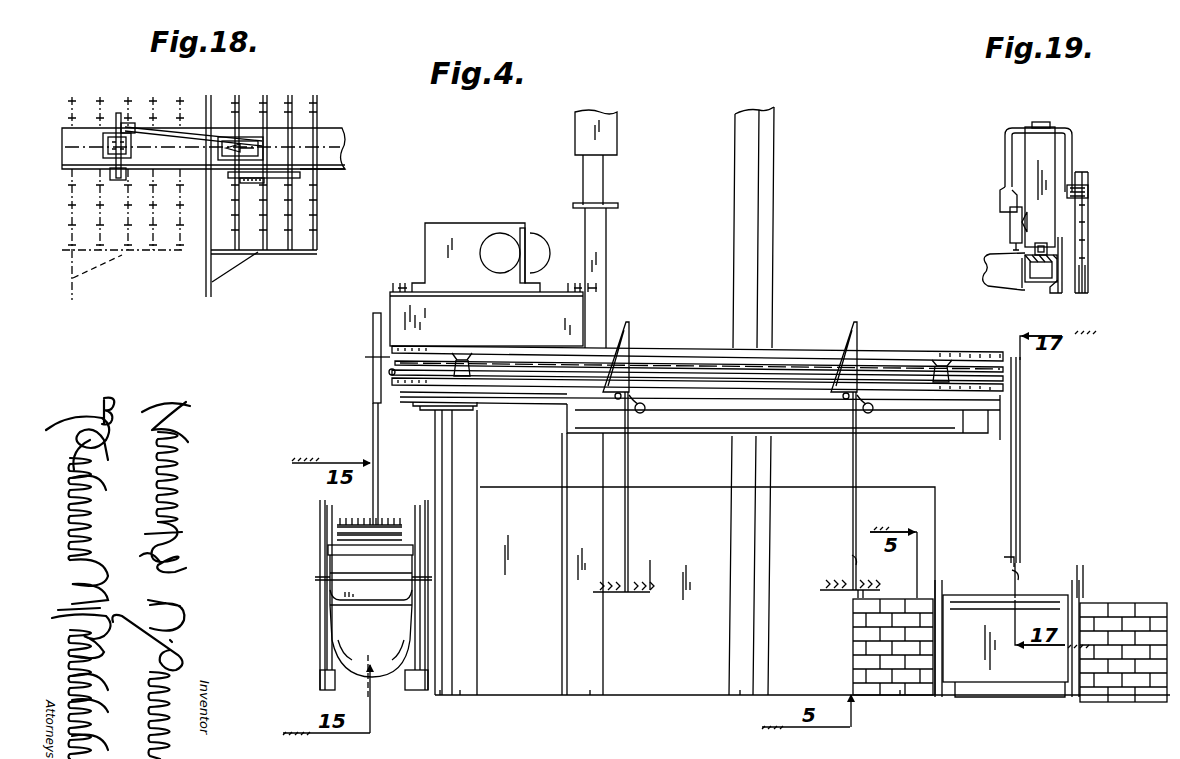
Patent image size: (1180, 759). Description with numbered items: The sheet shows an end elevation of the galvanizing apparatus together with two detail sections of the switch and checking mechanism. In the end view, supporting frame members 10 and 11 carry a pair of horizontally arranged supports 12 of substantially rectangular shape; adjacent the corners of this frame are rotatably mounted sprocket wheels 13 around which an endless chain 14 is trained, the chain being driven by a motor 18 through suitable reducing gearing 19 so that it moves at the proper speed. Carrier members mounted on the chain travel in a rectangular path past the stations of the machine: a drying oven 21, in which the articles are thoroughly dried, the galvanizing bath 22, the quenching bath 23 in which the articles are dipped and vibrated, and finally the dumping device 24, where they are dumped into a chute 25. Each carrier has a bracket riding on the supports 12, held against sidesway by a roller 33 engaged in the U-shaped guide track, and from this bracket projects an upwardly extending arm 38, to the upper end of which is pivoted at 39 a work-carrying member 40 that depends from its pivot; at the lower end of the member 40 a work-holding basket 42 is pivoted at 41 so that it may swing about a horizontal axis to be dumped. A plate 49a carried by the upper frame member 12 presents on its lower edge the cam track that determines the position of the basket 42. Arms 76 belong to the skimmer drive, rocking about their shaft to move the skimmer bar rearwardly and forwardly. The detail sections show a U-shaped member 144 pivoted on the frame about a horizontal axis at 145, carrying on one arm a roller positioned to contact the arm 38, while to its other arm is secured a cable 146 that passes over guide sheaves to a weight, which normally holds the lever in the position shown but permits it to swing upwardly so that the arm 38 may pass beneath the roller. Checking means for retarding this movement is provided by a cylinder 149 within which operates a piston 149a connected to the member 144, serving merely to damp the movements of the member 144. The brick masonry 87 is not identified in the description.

In FIG. 4, the supporting frame member 10 is at (770, 272).
In FIG. 4, the supporting frame member 11 is at (470, 426).
In FIG. 18, the horizontally arranged support 12 is at (334, 150).
In FIG. 19, the horizontally arranged support 12 is at (1000, 274).
In FIG. 4, the horizontally arranged support 12 is at (726, 350).
In FIG. 4, the sprocket wheel 13 is at (464, 358).
In FIG. 4, the endless chain 14 is at (660, 356).
In FIG. 4, the motor 18 is at (537, 244).
In FIG. 4, the reducing gearing 19 is at (445, 236).
In FIG. 4, the drying oven 21 is at (688, 530).
In FIG. 4, the galvanizing bath 22 is at (1110, 605).
In FIG. 4, the quenching bath 23 is at (974, 646).
In FIG. 4, the dumping device 24 is at (320, 560).
In FIG. 4, the chute 25 is at (380, 648).
In FIG. 19, the roller 33 is at (1040, 268).
In FIG. 18, the upwardly projecting arm 38 is at (278, 172).
In FIG. 19, the upwardly projecting arm 38 is at (1090, 226).
In FIG. 4, the upwardly projecting arm 38 is at (384, 322).
In FIG. 19, the pivot 39 is at (1088, 178).
In FIG. 18, the work-carrying member 40 is at (252, 183).
In FIG. 19, the work-carrying member 40 is at (1088, 260).
In FIG. 4, the work-carrying member 40 is at (373, 392).
In FIG. 4, the pivot 41 is at (852, 553).
In FIG. 18, the work-holding basket 42 is at (248, 262).
In FIG. 4, the work-holding basket 42 is at (382, 522).
In FIG. 18, the plate 49a is at (325, 170).
In FIG. 19, the plate 49a is at (1063, 265).
In FIG. 4, the arm 76 is at (944, 662).
In FIG. 4, the masonry wall 87 is at (935, 588).
In FIG. 18, the U-shaped member 144 is at (117, 118).
In FIG. 19, the U-shaped member 144 is at (1072, 140).
In FIG. 18, the pivot 145 is at (108, 148).
In FIG. 19, the pivot 145 is at (1046, 108).
In FIG. 18, the cable 146 is at (195, 132).
In FIG. 19, the cable 146 is at (1010, 222).
In FIG. 18, the cylinder 149 is at (130, 126).
In FIG. 19, the cylinder 149 is at (1010, 232).
In FIG. 19, the piston 149a is at (1004, 206).